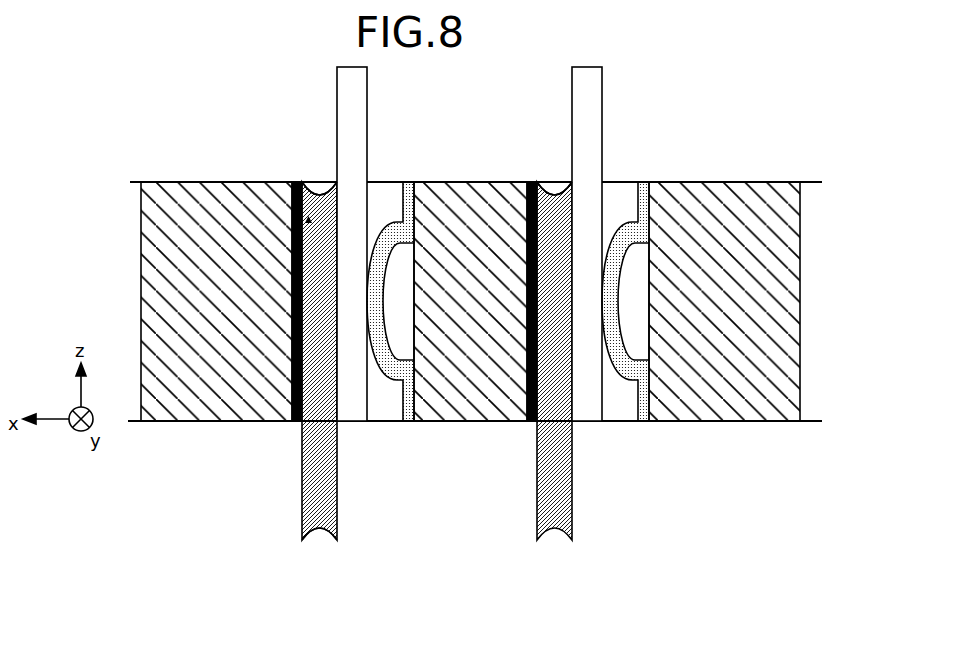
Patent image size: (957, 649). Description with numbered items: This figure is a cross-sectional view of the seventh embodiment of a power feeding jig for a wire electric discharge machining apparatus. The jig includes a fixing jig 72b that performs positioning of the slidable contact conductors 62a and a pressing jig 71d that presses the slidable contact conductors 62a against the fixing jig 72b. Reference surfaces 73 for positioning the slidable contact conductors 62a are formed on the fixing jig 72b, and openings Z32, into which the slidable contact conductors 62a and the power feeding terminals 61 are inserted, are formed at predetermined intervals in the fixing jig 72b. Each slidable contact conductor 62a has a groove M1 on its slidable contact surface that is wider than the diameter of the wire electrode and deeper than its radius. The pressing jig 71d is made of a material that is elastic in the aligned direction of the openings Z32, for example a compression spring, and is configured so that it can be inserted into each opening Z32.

The power feeding terminal 61 is at (352, 410).
The slidable contact conductor 62a is at (305, 505).
The pressing jig 71d is at (385, 228).
The fixing jig 72b is at (192, 403).
The reference surface 73 is at (292, 380).
The opening Z32 is at (320, 196).
The groove M1 is at (318, 537).